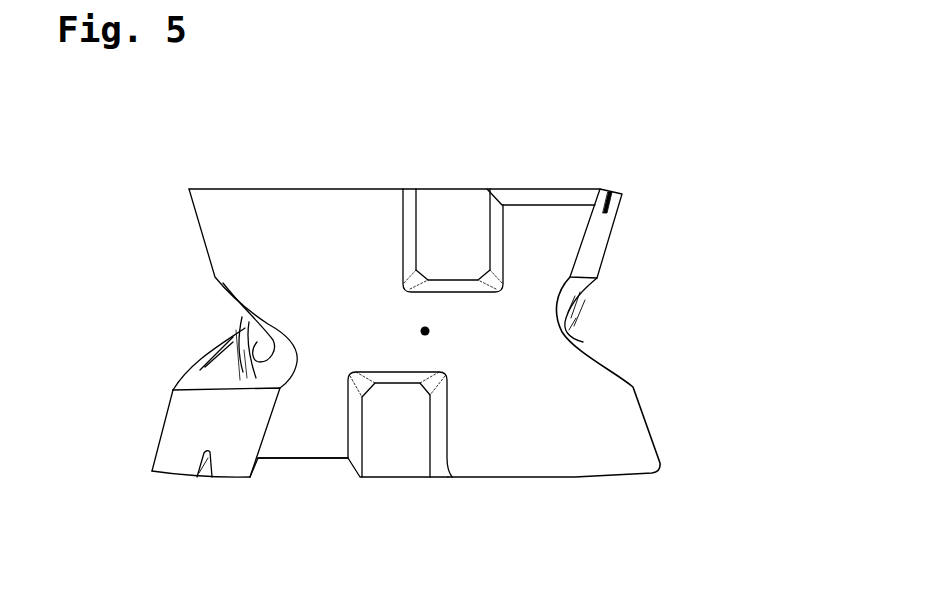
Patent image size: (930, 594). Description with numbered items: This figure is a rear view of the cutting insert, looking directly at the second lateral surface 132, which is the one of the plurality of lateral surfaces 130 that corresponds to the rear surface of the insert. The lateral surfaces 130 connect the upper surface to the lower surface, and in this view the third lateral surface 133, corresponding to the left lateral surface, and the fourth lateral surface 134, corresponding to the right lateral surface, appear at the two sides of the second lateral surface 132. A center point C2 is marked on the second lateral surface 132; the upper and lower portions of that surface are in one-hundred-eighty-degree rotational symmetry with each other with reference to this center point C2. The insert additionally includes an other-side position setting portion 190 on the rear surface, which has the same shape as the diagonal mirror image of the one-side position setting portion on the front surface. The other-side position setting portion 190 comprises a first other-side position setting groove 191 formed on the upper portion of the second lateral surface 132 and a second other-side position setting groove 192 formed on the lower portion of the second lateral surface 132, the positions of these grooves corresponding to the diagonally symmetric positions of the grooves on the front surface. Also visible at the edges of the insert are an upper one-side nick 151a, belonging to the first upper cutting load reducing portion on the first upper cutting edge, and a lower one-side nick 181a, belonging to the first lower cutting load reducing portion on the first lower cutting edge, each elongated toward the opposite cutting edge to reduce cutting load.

The lateral surfaces 130 is at (417, 338).
The second lateral surface 132 is at (303, 450).
The third lateral surface 133 is at (607, 240).
The fourth lateral surface 134 is at (177, 425).
The upper one-side nick 151a is at (608, 188).
The lower one-side nick 181a is at (198, 473).
The other-side position setting portion 190 is at (425, 332).
The first other-side position setting groove 191 is at (452, 205).
The second other-side position setting groove 192 is at (407, 440).
The center point C2 is at (425, 331).